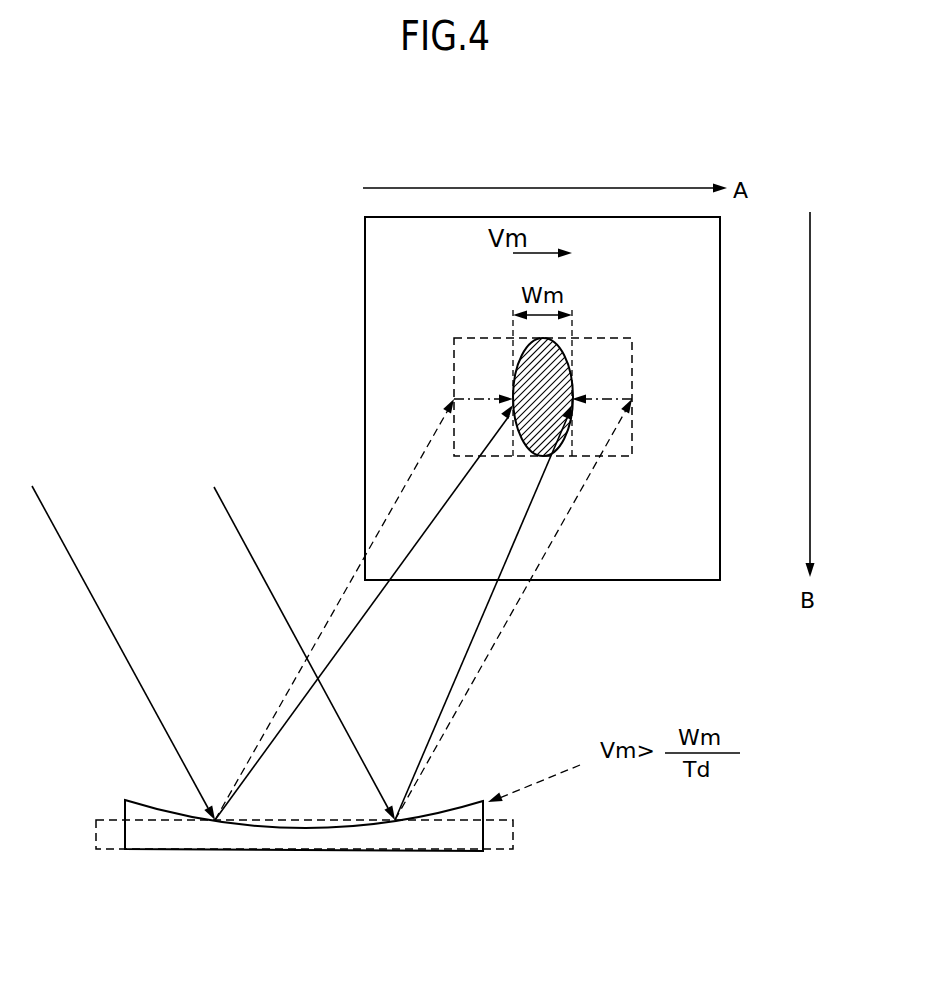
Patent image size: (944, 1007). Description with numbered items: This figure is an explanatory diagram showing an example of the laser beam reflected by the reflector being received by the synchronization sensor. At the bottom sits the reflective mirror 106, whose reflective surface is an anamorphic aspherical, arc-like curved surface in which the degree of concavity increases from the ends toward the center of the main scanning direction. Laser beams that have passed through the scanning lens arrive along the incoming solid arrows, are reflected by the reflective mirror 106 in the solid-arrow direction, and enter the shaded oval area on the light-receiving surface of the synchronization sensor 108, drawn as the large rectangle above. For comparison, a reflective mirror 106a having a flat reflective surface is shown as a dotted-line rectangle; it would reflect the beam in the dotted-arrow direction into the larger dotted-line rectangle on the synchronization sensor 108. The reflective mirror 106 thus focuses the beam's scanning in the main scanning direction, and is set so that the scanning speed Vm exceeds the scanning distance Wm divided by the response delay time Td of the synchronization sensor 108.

The reflective mirror 106 is at (125, 815).
The reflective mirror having a flat reflective surface 106a is at (112, 855).
The synchronization sensor 108 is at (365, 290).